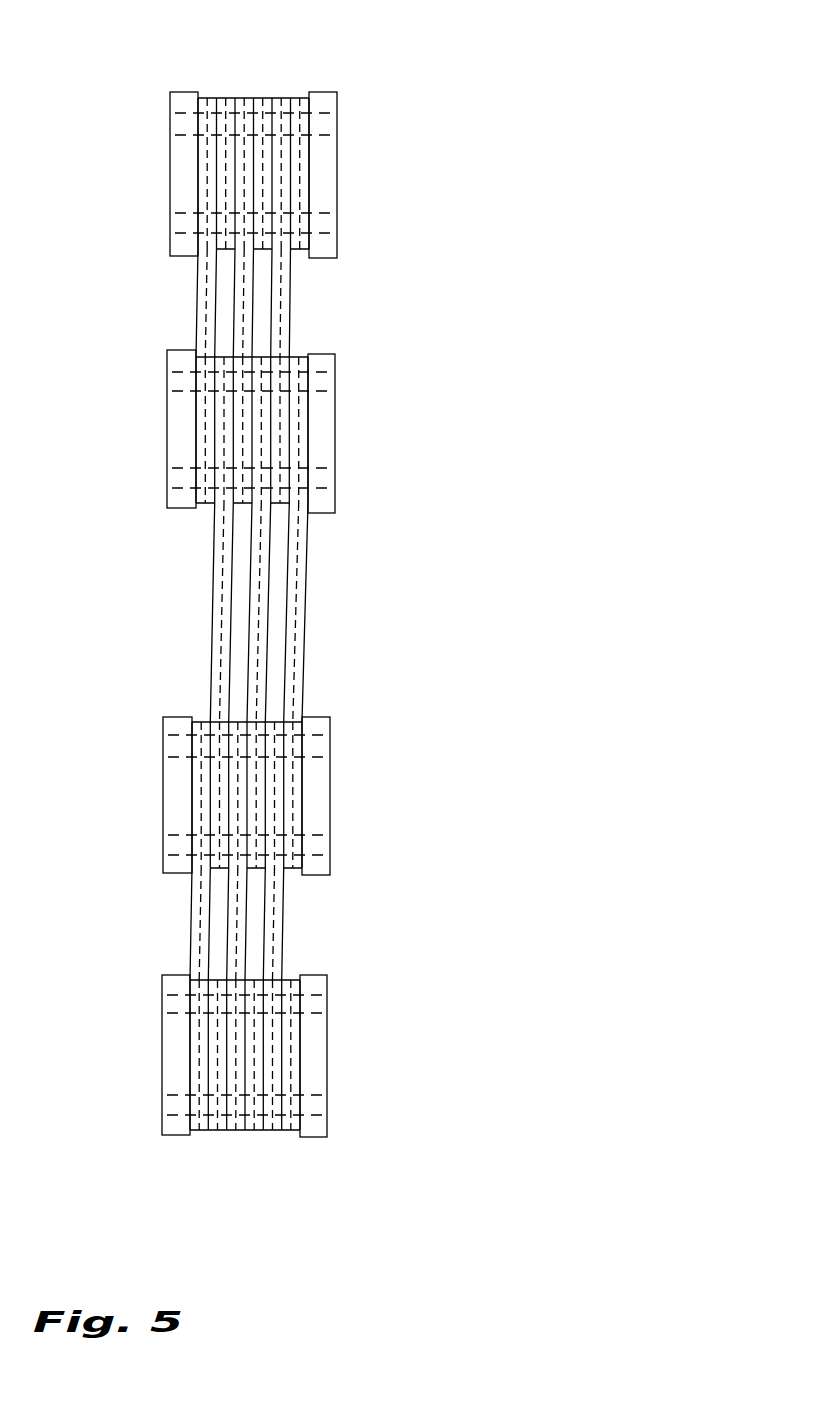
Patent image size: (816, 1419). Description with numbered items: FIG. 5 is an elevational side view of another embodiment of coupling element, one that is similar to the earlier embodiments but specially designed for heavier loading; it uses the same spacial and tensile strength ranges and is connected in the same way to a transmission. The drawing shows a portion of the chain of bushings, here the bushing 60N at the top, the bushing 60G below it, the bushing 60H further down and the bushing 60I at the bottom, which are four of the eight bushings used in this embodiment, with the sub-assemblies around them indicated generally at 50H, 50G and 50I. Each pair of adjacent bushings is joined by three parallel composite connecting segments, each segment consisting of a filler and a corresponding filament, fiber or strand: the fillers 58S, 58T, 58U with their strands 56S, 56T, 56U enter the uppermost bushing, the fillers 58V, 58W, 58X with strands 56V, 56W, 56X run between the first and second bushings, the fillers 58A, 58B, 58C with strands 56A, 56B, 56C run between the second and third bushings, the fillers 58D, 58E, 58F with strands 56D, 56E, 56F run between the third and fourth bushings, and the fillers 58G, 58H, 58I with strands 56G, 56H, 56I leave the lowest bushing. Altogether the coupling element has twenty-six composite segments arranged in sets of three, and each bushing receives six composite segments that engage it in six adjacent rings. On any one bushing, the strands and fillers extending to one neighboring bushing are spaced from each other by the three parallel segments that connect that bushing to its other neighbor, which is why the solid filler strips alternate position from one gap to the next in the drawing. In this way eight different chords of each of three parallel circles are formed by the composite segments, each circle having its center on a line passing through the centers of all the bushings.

The memory module 50G is at (412, 373).
The memory module 50H is at (373, 115).
The memory module 50I is at (363, 1130).
The bushing 60N is at (337, 170).
The bushing 60G is at (335, 448).
The bushing 60H is at (330, 793).
The bushing 60I is at (328, 1054).
The filament, fiber or strand 56A is at (220, 636).
The filament, fiber or strand 56B is at (257, 662).
The filament, fiber or strand 56C is at (295, 643).
The filament, fiber or strand 56D is at (200, 923).
The filament, fiber or strand 56E is at (238, 878).
The filament, fiber or strand 56F is at (274, 920).
The filament, fiber or strand 56G is at (203, 1130).
The filament, fiber or strand 56H is at (235, 1130).
The filament, fiber or strand 56I is at (308, 1130).
The filament, fiber or strand 56S is at (230, 96).
The filament, fiber or strand 56T is at (273, 97).
The filament, fiber or strand 56U is at (295, 97).
The filament, fiber or strand 56V is at (205, 274).
The filament, fiber or strand 56W is at (238, 300).
The filament, fiber or strand 56X is at (281, 272).
The filler 58A is at (213, 555).
The filler 58B is at (250, 578).
The filler 58C is at (306, 570).
The filler 58D is at (192, 954).
The filler 58E is at (228, 902).
The filler 58F is at (283, 952).
The filler 58G is at (200, 1130).
The filler 58H is at (255, 1130).
The filler 58I is at (287, 1130).
The filler 58S is at (222, 97).
The filler 58T is at (259, 97).
The filler 58U is at (303, 97).
The filler 58V is at (198, 295).
The filler 58W is at (235, 331).
The filler 58X is at (290, 308).